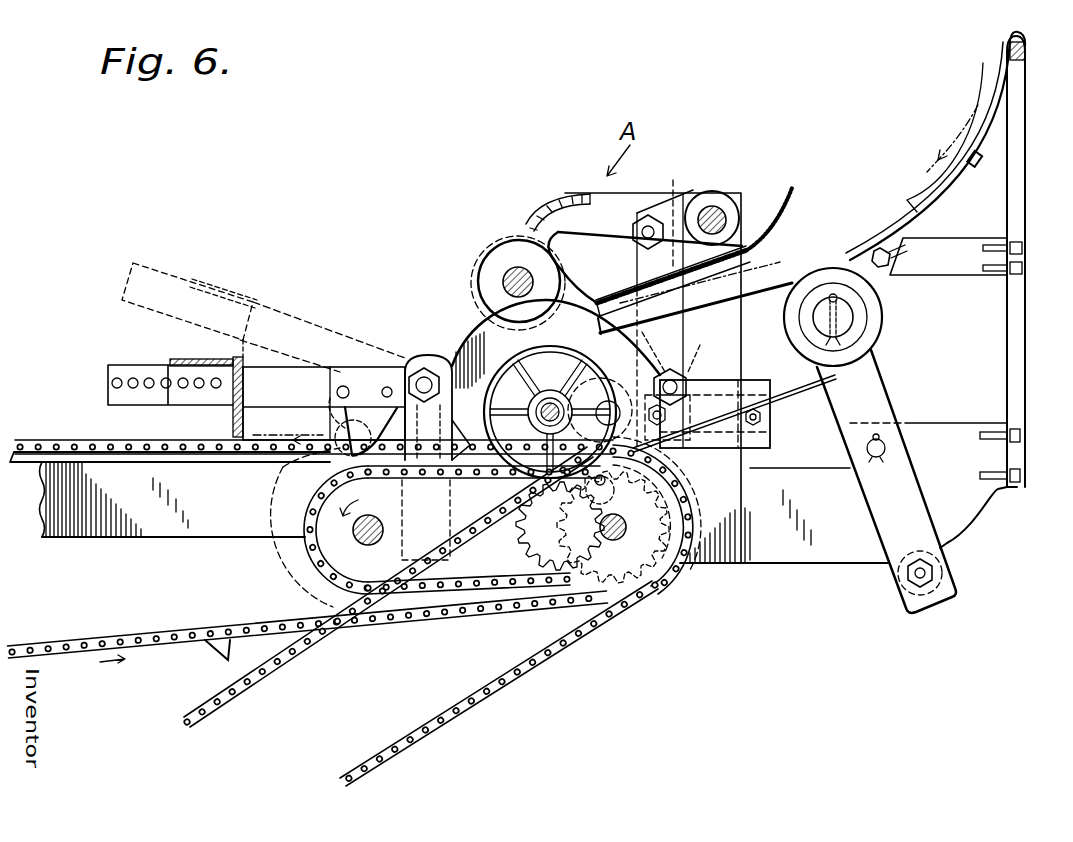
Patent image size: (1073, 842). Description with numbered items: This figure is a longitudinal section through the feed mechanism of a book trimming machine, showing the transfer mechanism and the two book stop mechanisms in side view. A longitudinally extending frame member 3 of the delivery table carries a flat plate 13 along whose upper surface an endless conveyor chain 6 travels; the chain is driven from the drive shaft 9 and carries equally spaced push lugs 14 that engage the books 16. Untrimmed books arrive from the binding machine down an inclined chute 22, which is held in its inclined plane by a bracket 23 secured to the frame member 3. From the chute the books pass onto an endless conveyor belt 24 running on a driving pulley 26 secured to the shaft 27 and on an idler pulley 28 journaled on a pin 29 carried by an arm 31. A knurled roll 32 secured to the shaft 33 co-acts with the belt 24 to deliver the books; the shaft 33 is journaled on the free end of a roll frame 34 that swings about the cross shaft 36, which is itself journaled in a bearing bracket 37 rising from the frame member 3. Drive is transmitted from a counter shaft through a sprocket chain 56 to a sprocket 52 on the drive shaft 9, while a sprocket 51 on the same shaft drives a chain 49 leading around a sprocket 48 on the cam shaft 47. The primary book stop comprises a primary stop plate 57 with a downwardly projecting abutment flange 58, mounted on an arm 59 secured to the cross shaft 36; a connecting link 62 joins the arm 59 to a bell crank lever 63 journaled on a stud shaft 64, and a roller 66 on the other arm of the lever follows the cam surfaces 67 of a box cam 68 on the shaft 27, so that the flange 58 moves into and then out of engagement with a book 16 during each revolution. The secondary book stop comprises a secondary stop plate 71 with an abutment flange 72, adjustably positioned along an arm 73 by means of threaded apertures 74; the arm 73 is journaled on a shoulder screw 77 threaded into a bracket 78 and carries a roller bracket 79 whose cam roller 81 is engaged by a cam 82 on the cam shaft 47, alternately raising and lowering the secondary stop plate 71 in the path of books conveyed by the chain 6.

The frame member 3 is at (80, 538).
The endless conveyor chain 6 is at (62, 441).
The drive shaft 9 is at (613, 527).
The flat plate 13 is at (30, 463).
The push lug 14 is at (216, 652).
The book 16 is at (976, 99).
The chute 22 is at (905, 217).
The bracket 23 is at (1040, 204).
The endless conveyor belt 24 is at (802, 284).
The driving pulley 26 is at (550, 404).
The shaft 27 is at (600, 396).
The idler pulley 28 is at (790, 328).
The pin 29 is at (848, 320).
The arm 31 is at (877, 392).
The knurled roll 32 is at (495, 242).
The shaft 33 is at (505, 274).
The roll frame 34 is at (571, 196).
The cross shaft 36 is at (714, 205).
The bearing bracket 37 is at (797, 238).
The cam shaft 47 is at (368, 545).
The sprocket 48 is at (308, 542).
The chain 49 is at (312, 560).
The sprocket 51 is at (550, 545).
The sprocket 52 is at (655, 592).
The sprocket chain 56 is at (245, 692).
The primary stop plate 57 is at (801, 184).
The abutment flange 58 is at (590, 292).
The arm 59 is at (664, 212).
The connecting link 62 is at (730, 272).
The bell crank lever 63 is at (680, 370).
The stud shaft 64 is at (707, 414).
The roller 66 is at (606, 480).
The cam surface 67 is at (556, 344).
The box cam 68 is at (468, 303).
The secondary stop plate 71 is at (182, 358).
The abutment flange 72 is at (240, 334).
The arm 73 is at (130, 276).
The threaded aperture 74 is at (160, 379).
The shoulder screw 77 is at (410, 350).
The bracket 78 is at (433, 356).
The roller bracket 79 is at (332, 400).
The cam roller 81 is at (336, 432).
The cam 82 is at (310, 588).